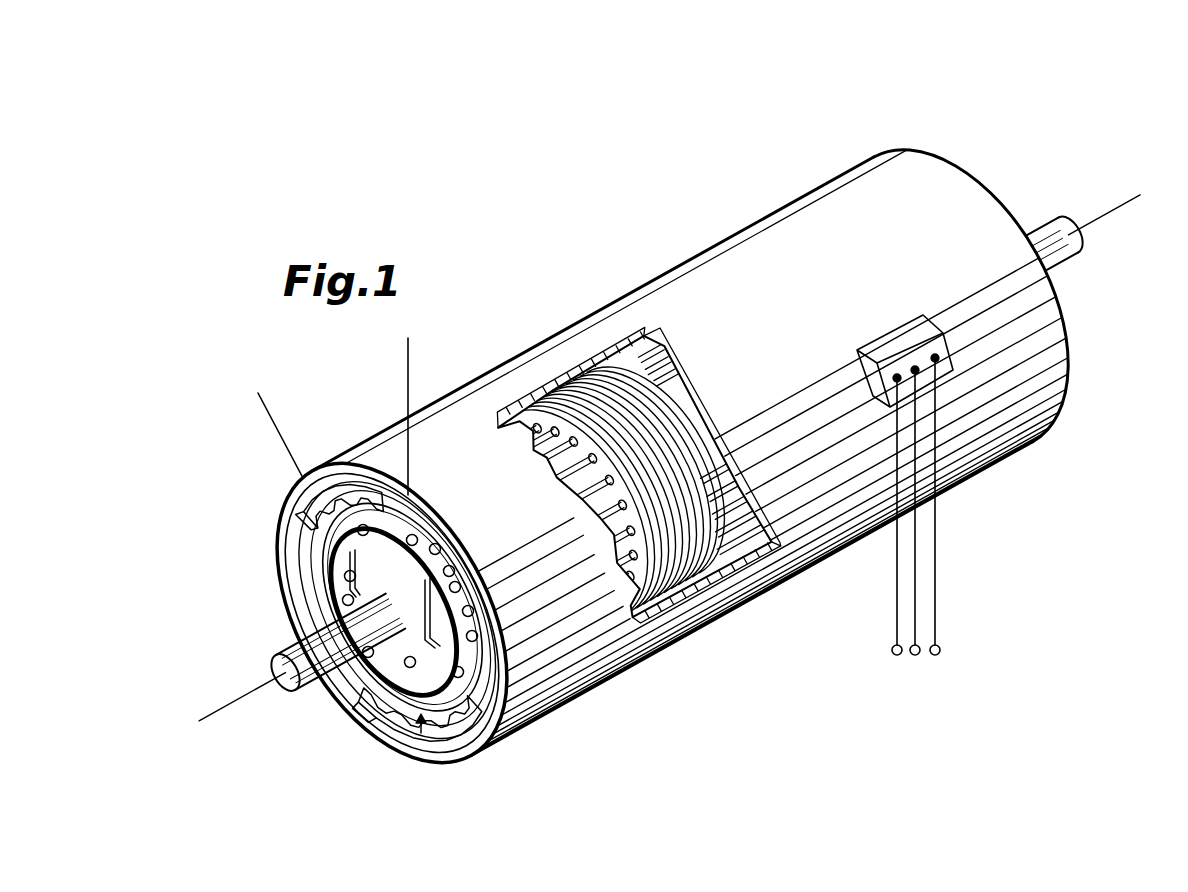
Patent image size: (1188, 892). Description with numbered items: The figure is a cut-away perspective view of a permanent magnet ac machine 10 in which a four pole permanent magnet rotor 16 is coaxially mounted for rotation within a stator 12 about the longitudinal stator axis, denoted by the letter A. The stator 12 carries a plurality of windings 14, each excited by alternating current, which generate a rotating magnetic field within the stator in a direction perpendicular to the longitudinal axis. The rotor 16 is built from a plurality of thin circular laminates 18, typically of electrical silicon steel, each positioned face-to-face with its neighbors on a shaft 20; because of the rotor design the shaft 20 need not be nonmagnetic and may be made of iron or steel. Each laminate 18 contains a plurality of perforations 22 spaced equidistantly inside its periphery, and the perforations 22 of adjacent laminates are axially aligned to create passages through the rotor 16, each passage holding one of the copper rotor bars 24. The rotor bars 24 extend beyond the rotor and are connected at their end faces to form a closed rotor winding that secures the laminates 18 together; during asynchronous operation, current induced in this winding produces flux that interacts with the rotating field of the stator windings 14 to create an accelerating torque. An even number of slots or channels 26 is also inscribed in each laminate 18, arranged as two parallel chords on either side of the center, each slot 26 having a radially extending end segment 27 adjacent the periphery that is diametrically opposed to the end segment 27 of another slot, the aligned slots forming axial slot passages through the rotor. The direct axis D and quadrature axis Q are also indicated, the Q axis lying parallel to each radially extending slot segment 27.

The permanent magnet ac machine 10 is at (334, 763).
The stator 12 is at (556, 716).
The windings 14 is at (302, 554).
The four pole permanent magnet rotor 16 is at (428, 740).
The thin circular laminates 18 is at (497, 744).
The shaft 20 is at (280, 686).
The perforations 22 is at (478, 592).
The rotor bars 24 is at (414, 536).
The slots or channels 26 is at (394, 612).
The radially extending end segment 27 is at (395, 599).